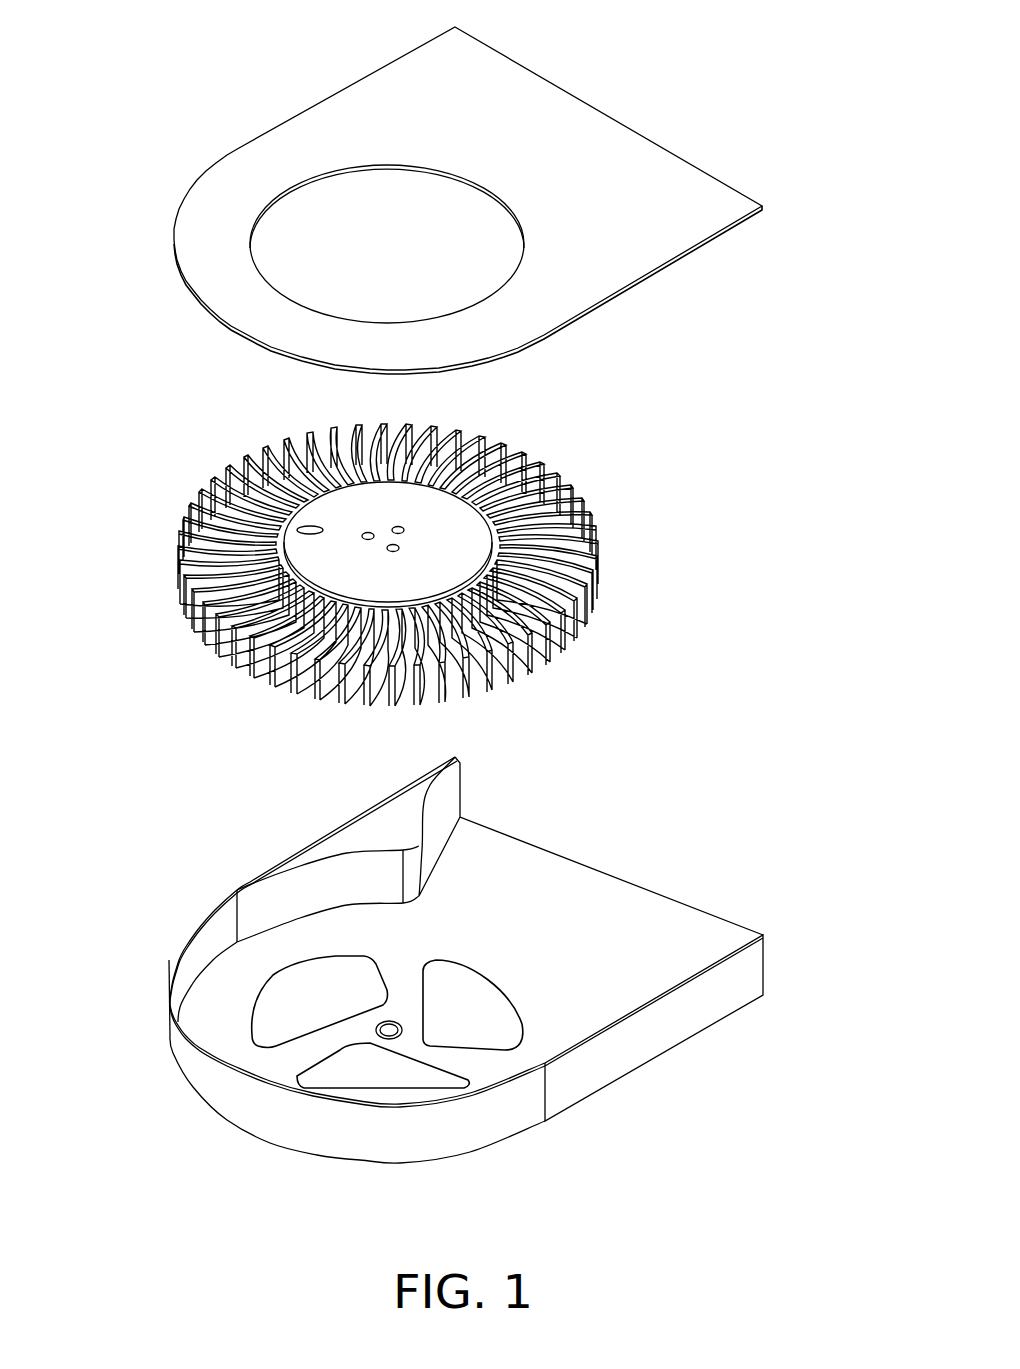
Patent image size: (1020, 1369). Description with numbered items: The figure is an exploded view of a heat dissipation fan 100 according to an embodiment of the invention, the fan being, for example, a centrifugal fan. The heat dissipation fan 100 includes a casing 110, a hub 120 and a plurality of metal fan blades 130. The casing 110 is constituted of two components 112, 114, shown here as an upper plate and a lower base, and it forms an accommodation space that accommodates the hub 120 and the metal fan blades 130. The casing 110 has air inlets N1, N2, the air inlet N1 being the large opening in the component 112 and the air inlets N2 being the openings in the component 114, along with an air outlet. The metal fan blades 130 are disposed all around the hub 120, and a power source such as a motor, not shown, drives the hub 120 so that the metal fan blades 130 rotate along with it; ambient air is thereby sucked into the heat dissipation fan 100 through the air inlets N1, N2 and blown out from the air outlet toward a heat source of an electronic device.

The heat dissipation fan 100 is at (816, 1273).
The casing 110 is at (104, 88).
The component of the casing 112 is at (317, 138).
The component of the casing 114 is at (225, 1088).
The hub 120 is at (432, 502).
The metal fan blades 130 is at (543, 482).
The air inlet N1 is at (403, 226).
The air inlets N2 is at (364, 1075).